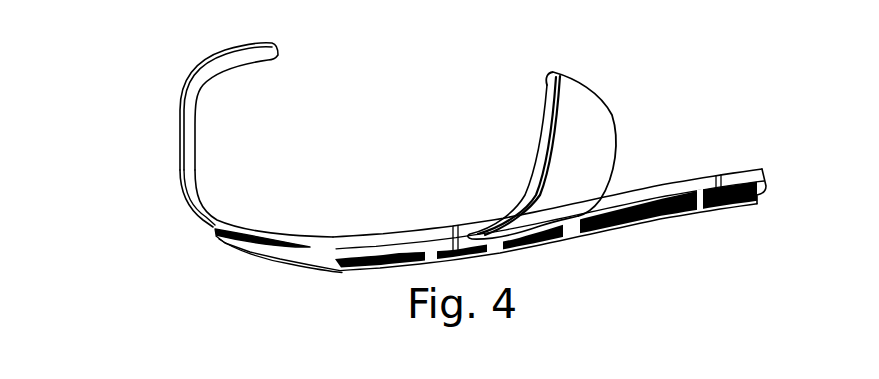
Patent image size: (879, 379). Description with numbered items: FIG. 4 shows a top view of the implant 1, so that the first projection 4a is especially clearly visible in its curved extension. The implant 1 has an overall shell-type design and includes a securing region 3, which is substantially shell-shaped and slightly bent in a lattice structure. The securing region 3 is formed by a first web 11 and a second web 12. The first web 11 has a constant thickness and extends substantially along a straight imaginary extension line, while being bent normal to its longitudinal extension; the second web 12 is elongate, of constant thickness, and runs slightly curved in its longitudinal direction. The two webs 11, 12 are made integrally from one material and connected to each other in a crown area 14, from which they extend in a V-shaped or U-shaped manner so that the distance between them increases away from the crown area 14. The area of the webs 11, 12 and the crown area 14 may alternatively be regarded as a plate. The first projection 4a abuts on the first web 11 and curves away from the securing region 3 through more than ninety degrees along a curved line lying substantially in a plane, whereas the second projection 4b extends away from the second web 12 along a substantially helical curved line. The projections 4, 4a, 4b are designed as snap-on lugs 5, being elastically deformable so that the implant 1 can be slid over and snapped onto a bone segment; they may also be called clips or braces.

The implant 1 is at (652, 67).
The securing region 3 is at (380, 245).
The projections 4 is at (401, 141).
The first projection 4a is at (182, 137).
The second projection 4b is at (600, 115).
The snap-on lugs 5 is at (401, 141).
The first web 11 is at (297, 247).
The second web 12 is at (682, 198).
The crown area 14 is at (353, 242).